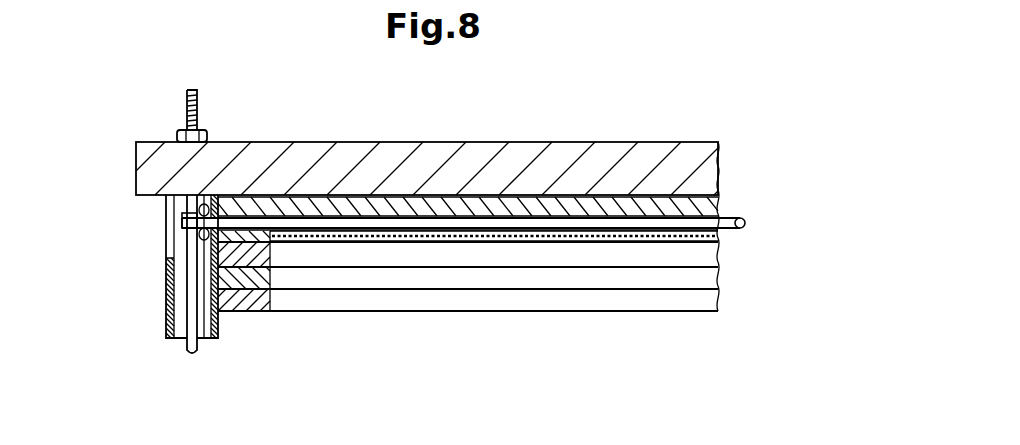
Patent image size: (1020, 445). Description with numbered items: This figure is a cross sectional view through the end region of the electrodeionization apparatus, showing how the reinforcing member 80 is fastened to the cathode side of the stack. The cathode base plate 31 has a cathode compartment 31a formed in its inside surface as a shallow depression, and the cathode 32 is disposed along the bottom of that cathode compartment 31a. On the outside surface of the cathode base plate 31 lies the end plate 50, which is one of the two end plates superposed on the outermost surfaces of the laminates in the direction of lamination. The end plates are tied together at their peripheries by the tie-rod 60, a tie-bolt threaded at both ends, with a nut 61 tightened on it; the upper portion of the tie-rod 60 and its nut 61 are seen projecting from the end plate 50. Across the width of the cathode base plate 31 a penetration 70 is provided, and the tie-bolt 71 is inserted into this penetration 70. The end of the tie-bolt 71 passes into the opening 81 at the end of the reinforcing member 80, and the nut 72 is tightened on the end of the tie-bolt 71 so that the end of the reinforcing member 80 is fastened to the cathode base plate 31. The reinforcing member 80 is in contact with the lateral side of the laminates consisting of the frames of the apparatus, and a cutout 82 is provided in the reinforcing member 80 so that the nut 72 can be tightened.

The end plate 50 is at (667, 142).
The tie-rod 60 is at (198, 100).
The nut 61 is at (177, 137).
The penetration 70 is at (540, 216).
The tie-bolt 71 is at (737, 231).
The nut 72 is at (207, 207).
The reinforcing member 80 is at (162, 308).
The opening 81 is at (225, 207).
The cutout 82 is at (170, 255).
The cathode base plate 31 is at (722, 202).
The cathode compartment 31a is at (657, 248).
The cathode 32 is at (512, 242).